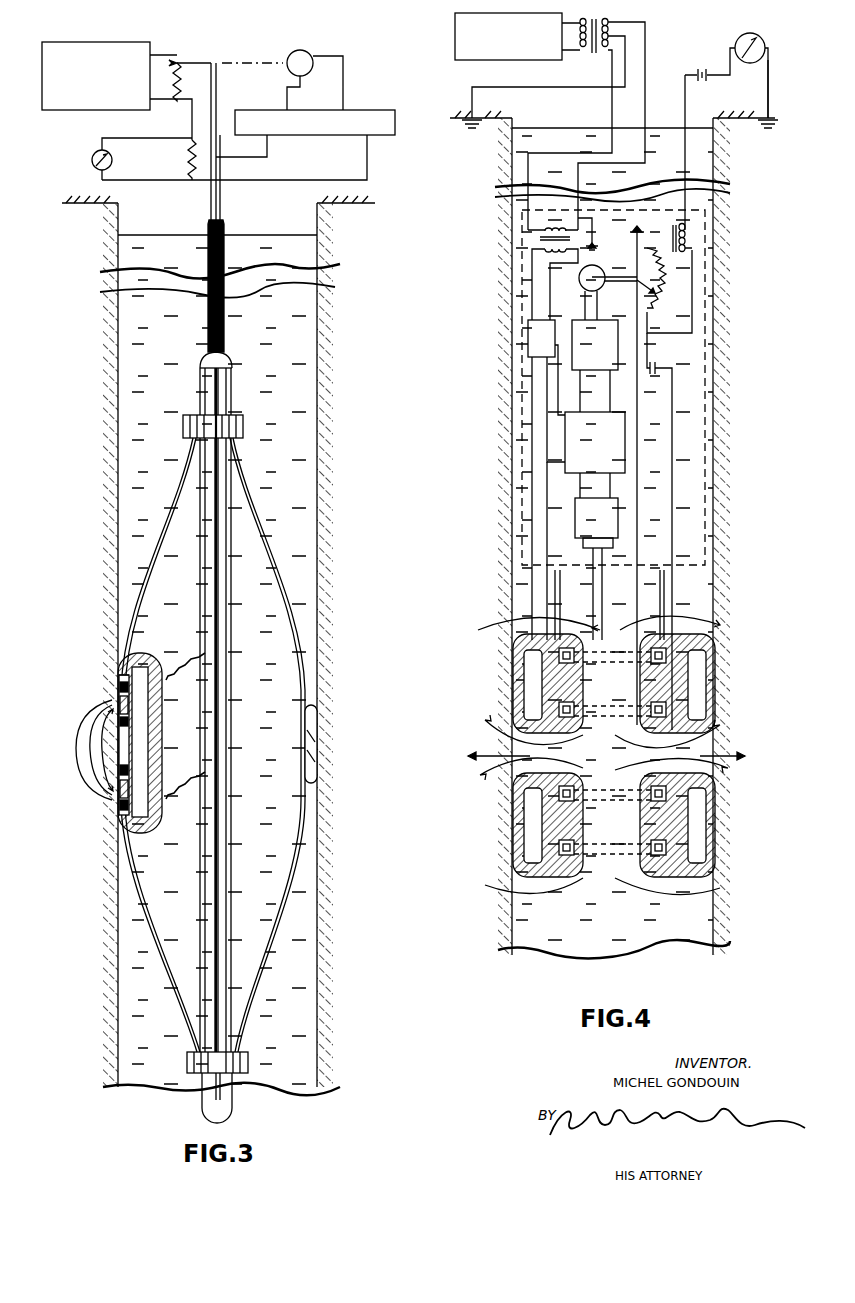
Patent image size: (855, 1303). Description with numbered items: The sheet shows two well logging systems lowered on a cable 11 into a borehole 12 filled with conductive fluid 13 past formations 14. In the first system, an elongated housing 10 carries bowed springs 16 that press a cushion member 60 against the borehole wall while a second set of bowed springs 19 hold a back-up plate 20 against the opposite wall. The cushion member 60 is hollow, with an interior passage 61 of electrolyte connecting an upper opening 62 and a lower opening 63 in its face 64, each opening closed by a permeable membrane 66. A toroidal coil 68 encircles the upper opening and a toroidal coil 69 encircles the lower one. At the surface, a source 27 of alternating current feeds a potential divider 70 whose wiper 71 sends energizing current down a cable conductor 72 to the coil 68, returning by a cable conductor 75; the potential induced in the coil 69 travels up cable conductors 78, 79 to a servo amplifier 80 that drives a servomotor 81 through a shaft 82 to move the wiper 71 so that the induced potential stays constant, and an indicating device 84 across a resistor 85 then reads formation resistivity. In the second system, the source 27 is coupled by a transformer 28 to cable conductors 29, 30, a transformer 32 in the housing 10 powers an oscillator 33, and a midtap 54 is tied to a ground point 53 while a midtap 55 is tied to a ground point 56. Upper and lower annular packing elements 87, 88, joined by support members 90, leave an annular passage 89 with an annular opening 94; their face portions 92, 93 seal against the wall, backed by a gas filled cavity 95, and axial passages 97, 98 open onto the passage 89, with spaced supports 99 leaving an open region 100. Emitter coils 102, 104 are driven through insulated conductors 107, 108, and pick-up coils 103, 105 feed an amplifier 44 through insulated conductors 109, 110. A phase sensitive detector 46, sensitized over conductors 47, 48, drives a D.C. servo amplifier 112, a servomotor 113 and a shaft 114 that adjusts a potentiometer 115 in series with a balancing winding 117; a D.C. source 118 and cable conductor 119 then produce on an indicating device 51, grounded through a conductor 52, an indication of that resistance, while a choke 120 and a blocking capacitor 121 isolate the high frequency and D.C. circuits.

In FIG. 3, the elongated housing 10 is at (232, 772).
In FIG. 4, the elongated housing 10 is at (705, 405).
In FIG. 3, the cable 11 is at (207, 330).
In FIG. 3, the borehole 12 is at (318, 312).
In FIG. 4, the borehole 12 is at (712, 133).
In FIG. 3, the conductive fluid 13 is at (220, 666).
In FIG. 4, the conductive fluid 13 is at (612, 544).
In FIG. 3, the formations 14 is at (218, 641).
In FIG. 4, the formations 14 is at (612, 533).
In FIG. 3, the bowed springs 16 is at (172, 528).
In FIG. 3, the second set of bowed springs 19 is at (264, 528).
In FIG. 3, the back-up plate 20 is at (304, 760).
In FIG. 3, the source of alternating current 27 is at (66, 42).
In FIG. 4, the source of alternating current 27 is at (530, 60).
In FIG. 4, the transformer 28 is at (592, 55).
In FIG. 4, the cable conductor 29 is at (611, 109).
In FIG. 4, the cable conductor 30 is at (645, 90).
In FIG. 4, the transformer 32 is at (535, 245).
In FIG. 4, the oscillator 33 is at (527, 330).
In FIG. 4, the amplifier 44 is at (620, 532).
In FIG. 4, the phase sensitive detector 46 is at (626, 440).
In FIG. 4, the conductor 47 is at (552, 462).
In FIG. 4, the conductor 48 is at (559, 403).
In FIG. 4, the indicating device 51 is at (737, 36).
In FIG. 4, the conductor 52 is at (767, 90).
In FIG. 4, the ground point 53 is at (471, 131).
In FIG. 4, the midtap 54 is at (618, 30).
In FIG. 4, the midtap 55 is at (548, 228).
In FIG. 4, the ground point 56 is at (600, 250).
In FIG. 3, the cushion member 60 is at (125, 662).
In FIG. 3, the interior passage 61 is at (150, 750).
In FIG. 3, the upper opening 62 is at (120, 699).
In FIG. 3, the lower opening 63 is at (120, 804).
In FIG. 3, the face 64 is at (120, 670).
In FIG. 3, the permeable membrane 66 is at (128, 720).
In FIG. 3, the toroidal coil 68 is at (120, 686).
In FIG. 3, the toroidal coil 69 is at (120, 806).
In FIG. 3, the potential divider 70 is at (182, 90).
In FIG. 3, the wiper 71 is at (210, 62).
In FIG. 3, the cable conductor 72 is at (216, 112).
In FIG. 3, the cable conductor 75 is at (208, 198).
In FIG. 3, the cable conductor 78 is at (270, 155).
In FIG. 3, the cable conductor 79 is at (368, 178).
In FIG. 3, the servo amplifier 80 is at (355, 108).
In FIG. 3, the servomotor 81 is at (300, 50).
In FIG. 3, the shaft 82 is at (236, 62).
In FIG. 3, the indicating device 84 is at (93, 156).
In FIG. 3, the resistor 85 is at (186, 157).
In FIG. 4, the annular packing element 87 is at (512, 648).
In FIG. 4, the annular packing element 88 is at (513, 850).
In FIG. 4, the annular passage 89 is at (718, 778).
In FIG. 4, the support members 90 is at (712, 742).
In FIG. 4, the peripheral face portion 92 is at (513, 690).
In FIG. 4, the peripheral face portion 93 is at (513, 820).
In FIG. 4, the annular opening 94 is at (715, 722).
In FIG. 4, the gas filled cavity 95 is at (528, 672).
In FIG. 4, the axial passage 97 is at (615, 725).
In FIG. 4, the axial passage 98 is at (608, 865).
In FIG. 4, the spaced supports 99 is at (664, 615).
In FIG. 4, the open region 100 is at (548, 605).
In FIG. 4, the toroidal coil 102 is at (650, 708).
In FIG. 4, the toroidal pick-up coil 103 is at (650, 663).
In FIG. 4, the toroidal coil 104 is at (650, 797).
In FIG. 4, the toroidal pick-up coil 105 is at (650, 850).
In FIG. 4, the insulated conductor 107 is at (533, 490).
In FIG. 4, the insulated conductor 108 is at (547, 520).
In FIG. 4, the insulated conductor 109 is at (596, 596).
In FIG. 4, the insulated conductor 110 is at (604, 620).
In FIG. 4, the D.C. servo amplifier 112 is at (606, 370).
In FIG. 4, the servomotor 113 is at (578, 292).
In FIG. 4, the shaft 114 is at (628, 284).
In FIG. 4, the potentiometer 115 is at (665, 304).
In FIG. 4, the balancing winding 117 is at (673, 435).
In FIG. 4, the source of constant D.C. potential 118 is at (702, 58).
In FIG. 4, the cable conductor 119 is at (684, 113).
In FIG. 4, the choke 120 is at (690, 240).
In FIG. 4, the blocking capacitor 121 is at (667, 363).